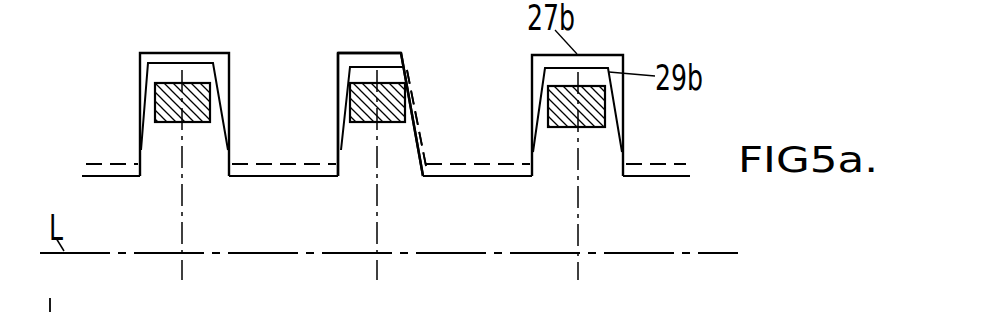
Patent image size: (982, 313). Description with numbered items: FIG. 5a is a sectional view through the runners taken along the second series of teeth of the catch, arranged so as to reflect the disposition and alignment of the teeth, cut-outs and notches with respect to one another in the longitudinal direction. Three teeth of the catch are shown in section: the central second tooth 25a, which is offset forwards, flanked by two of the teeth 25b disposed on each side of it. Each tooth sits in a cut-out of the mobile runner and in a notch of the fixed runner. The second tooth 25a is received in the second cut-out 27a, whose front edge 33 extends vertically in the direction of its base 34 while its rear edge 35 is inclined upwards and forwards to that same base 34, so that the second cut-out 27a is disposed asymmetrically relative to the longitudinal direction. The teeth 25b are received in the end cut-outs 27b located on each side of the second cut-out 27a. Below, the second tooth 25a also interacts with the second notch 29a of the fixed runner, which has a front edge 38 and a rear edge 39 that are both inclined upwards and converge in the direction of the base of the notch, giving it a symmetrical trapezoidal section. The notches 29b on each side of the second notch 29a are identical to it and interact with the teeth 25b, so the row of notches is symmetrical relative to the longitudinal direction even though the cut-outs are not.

The second cut-out 27a is at (373, 53).
The end cut-outs 27b is at (170, 52).
The second notch 29a is at (410, 73).
The notches 29b is at (150, 70).
The second tooth 25a is at (392, 123).
The teeth 25b is at (168, 123).
The front edge 33 is at (338, 100).
The base 34 is at (390, 53).
The rear edge 35 is at (412, 78).
The front edge 38 is at (352, 83).
The rear edge 39 is at (417, 117).